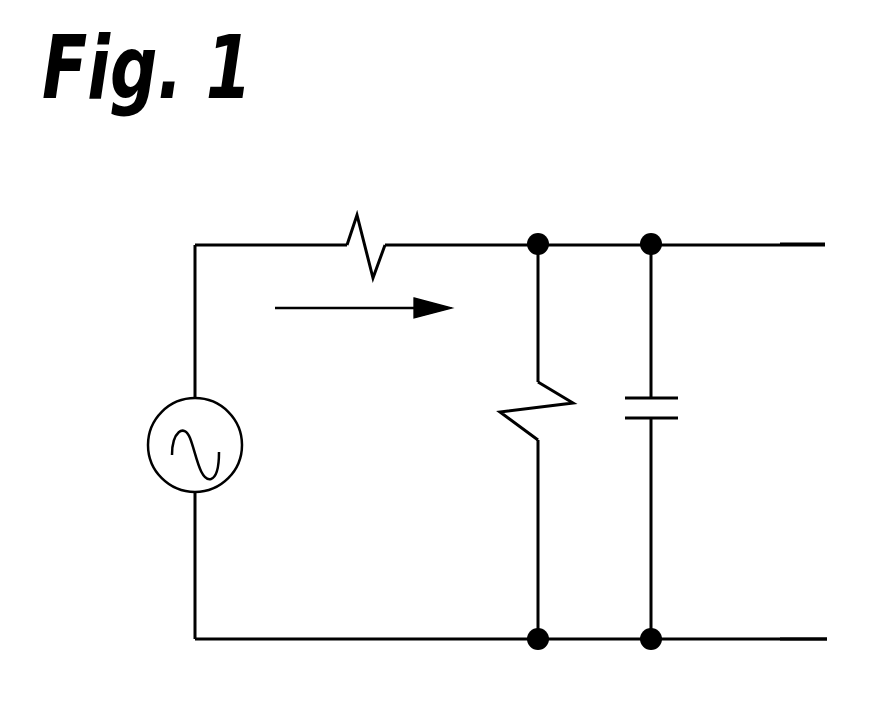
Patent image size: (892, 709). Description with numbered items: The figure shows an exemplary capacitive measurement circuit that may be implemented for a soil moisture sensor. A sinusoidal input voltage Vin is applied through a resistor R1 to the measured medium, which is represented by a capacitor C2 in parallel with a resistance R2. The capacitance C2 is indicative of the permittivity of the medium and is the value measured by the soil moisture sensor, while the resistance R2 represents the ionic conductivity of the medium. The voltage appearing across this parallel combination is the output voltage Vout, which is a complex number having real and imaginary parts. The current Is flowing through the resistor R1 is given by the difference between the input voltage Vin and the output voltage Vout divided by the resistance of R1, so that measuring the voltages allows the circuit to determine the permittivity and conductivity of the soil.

The resistor R1 is at (362, 222).
The ionic conductivity resistance R2 is at (508, 413).
The capacitor C2 is at (676, 418).
The current Is is at (363, 329).
The input voltage Vin is at (143, 445).
The output voltage Vout is at (819, 441).